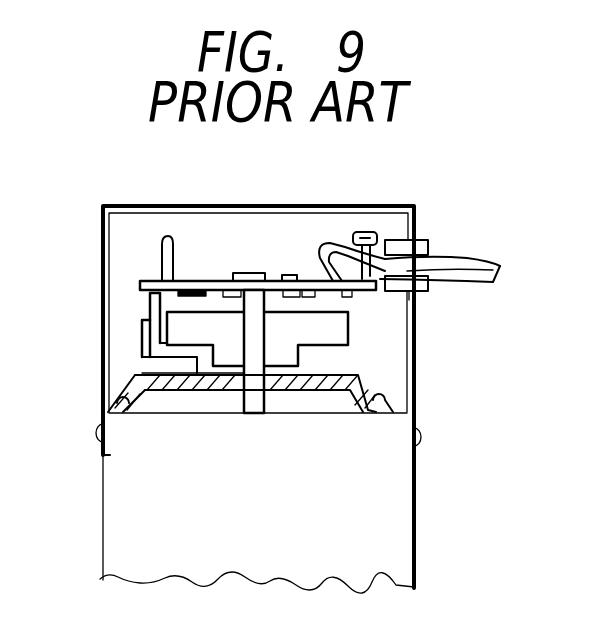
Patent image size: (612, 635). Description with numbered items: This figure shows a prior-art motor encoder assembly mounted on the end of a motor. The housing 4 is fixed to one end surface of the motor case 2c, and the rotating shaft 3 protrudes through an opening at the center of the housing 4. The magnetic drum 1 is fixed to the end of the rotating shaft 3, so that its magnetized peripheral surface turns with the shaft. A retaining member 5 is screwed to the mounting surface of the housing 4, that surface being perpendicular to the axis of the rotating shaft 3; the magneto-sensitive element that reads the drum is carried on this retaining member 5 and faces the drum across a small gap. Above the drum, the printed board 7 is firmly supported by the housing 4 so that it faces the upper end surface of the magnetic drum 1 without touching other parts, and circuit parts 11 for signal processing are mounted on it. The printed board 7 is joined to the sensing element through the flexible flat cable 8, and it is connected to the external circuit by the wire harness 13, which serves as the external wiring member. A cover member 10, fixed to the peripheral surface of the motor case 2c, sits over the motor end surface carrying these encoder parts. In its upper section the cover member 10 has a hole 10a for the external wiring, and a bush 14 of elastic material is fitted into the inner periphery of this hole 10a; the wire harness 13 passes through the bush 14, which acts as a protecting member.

The magnetic drum 1 is at (345, 336).
The motor case 2c is at (400, 481).
The rotating shaft 3 is at (247, 410).
The housing 4 is at (190, 393).
The retaining member 5 is at (148, 307).
The printed board 7 is at (300, 281).
The flexible flat cable 8 is at (172, 236).
The cover member 10 is at (362, 206).
The hole 10a is at (416, 300).
The circuit parts 11 is at (288, 275).
The wire harness 13 is at (467, 257).
The bush 14 is at (428, 240).